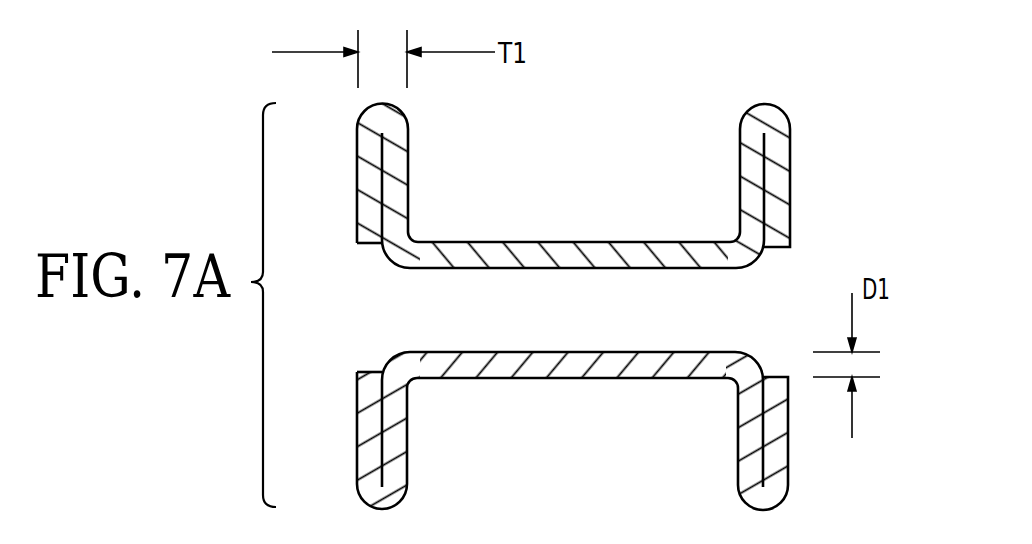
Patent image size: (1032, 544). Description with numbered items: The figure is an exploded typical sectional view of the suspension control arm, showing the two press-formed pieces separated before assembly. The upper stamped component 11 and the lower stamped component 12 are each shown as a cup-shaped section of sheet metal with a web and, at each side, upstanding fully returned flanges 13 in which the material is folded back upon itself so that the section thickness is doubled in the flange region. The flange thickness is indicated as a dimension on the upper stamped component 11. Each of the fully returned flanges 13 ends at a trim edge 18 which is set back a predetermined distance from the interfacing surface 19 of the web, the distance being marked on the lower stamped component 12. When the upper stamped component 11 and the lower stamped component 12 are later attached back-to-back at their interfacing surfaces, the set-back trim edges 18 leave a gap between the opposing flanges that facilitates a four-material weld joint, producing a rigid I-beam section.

The upper stamped component 11 is at (513, 245).
The lower stamped component 12 is at (502, 372).
The fully returned flanges 13 is at (768, 183).
The trim edge 18 is at (371, 371).
The interfacing surface 19 is at (624, 347).